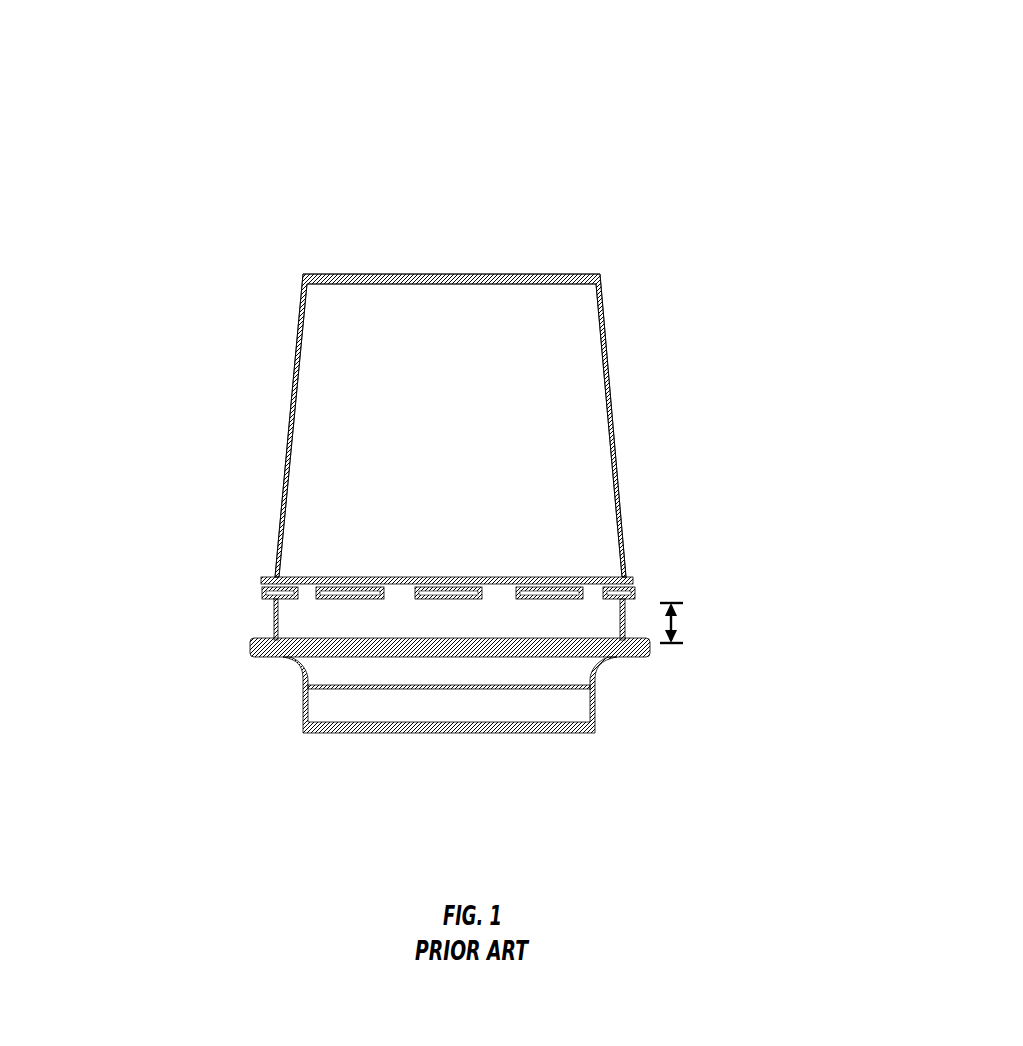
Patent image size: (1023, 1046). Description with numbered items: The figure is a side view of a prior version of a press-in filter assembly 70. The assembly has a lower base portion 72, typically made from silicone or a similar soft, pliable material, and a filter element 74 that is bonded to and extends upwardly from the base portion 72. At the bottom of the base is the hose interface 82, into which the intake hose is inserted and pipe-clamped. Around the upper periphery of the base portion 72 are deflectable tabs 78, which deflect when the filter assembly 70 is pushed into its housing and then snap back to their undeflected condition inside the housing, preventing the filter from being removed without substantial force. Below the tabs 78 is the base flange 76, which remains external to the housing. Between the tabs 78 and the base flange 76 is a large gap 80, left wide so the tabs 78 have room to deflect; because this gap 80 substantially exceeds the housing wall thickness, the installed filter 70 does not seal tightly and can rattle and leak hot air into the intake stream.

The filter assembly 70 is at (766, 214).
The lower base portion 72 is at (216, 723).
The filter element 74 is at (610, 443).
The base flange 76 is at (650, 648).
The deflectable tabs 78 is at (636, 596).
The gap 80 is at (680, 618).
The hose interface 82 is at (578, 708).